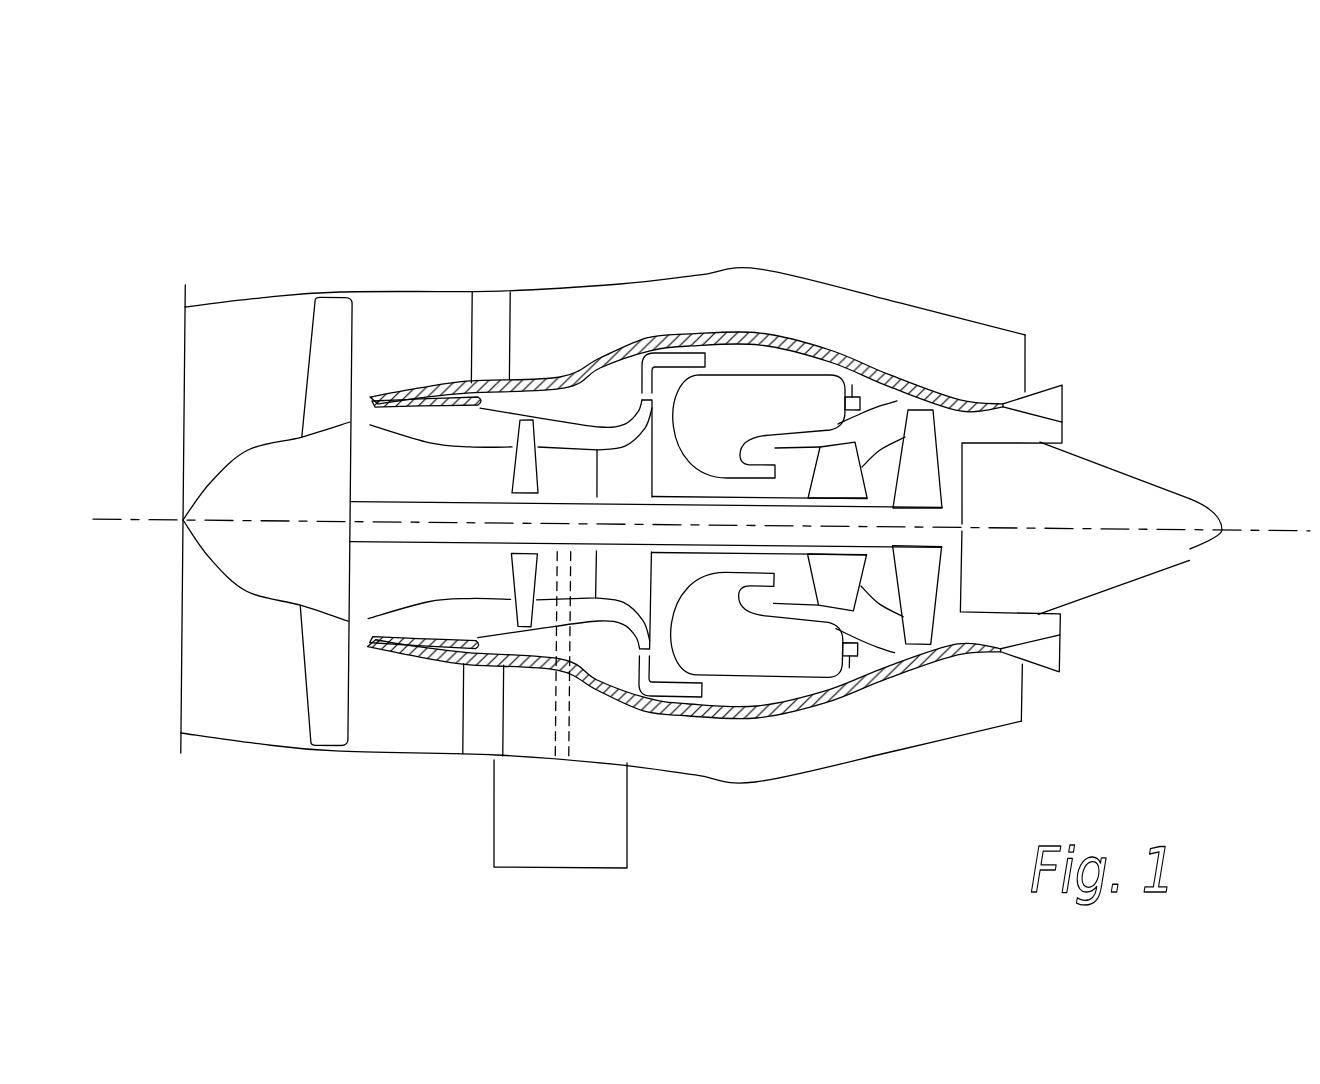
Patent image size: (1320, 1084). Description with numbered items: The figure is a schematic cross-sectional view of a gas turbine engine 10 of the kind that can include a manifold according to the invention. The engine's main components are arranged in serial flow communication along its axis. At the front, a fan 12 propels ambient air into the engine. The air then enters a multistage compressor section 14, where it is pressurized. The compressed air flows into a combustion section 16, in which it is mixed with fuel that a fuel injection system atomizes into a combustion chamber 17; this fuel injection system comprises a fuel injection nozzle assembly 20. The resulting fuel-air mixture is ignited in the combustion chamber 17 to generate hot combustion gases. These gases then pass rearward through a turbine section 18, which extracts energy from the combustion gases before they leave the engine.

The gas turbine engine 10 is at (841, 226).
The fan 12 is at (321, 665).
The multistage compressor section 14 is at (581, 437).
The combustion section 16 is at (759, 392).
The combustion chamber 17 is at (822, 400).
The turbine section 18 is at (878, 587).
The fuel injection nozzle assembly 20 is at (893, 398).